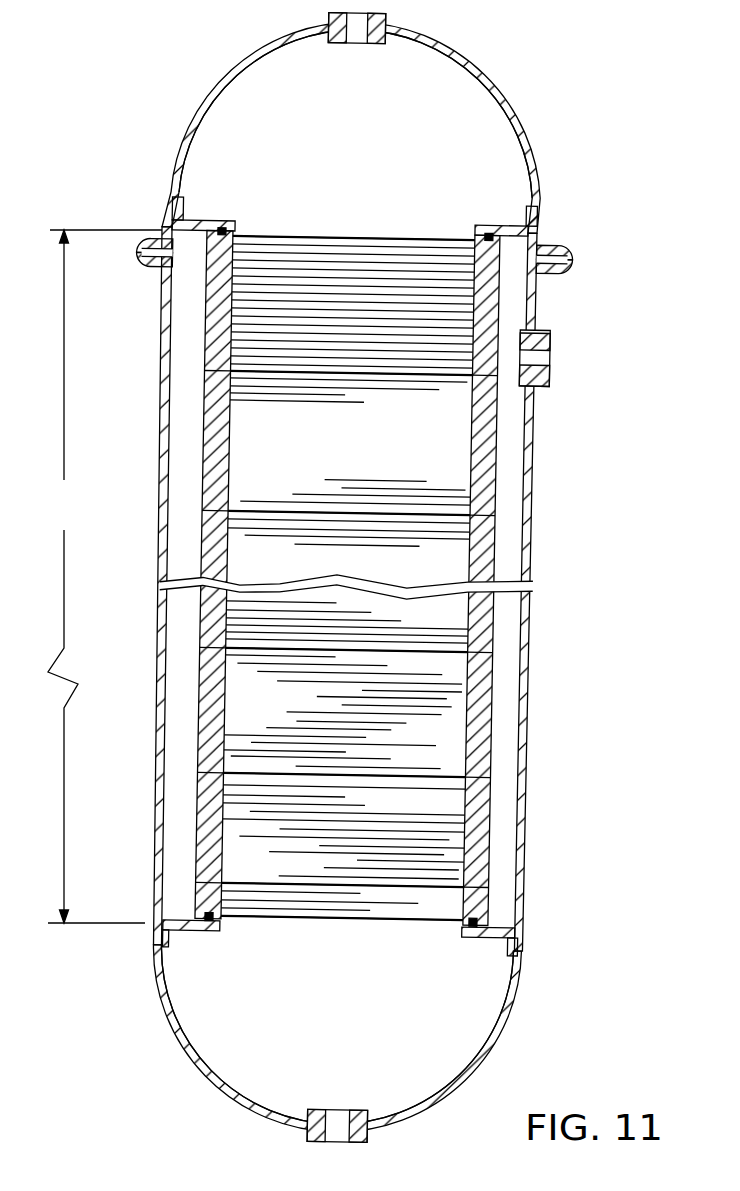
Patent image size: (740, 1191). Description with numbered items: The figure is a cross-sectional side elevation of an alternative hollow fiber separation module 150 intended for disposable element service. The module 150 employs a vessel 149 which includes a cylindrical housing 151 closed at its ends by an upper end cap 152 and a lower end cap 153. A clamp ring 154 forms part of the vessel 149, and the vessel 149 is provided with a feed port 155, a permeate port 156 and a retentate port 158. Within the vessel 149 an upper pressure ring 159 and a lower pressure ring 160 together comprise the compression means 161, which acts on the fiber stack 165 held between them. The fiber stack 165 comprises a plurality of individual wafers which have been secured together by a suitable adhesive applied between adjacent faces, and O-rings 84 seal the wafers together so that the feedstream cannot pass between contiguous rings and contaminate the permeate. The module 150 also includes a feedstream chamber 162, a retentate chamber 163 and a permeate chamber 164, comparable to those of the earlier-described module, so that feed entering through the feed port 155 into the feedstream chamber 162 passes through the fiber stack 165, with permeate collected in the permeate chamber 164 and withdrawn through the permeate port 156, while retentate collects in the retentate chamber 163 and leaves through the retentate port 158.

The O-ring 84 is at (487, 230).
The vessel 149 is at (159, 691).
The module 150 is at (546, 712).
The cylindrical housing 151 is at (540, 447).
The upper end cap 152 is at (508, 101).
The lower end cap 153 is at (508, 1024).
The clamp ring 154 is at (575, 259).
The feed port 155 is at (392, 18).
The permeate port 156 is at (544, 378).
The retentate port 158 is at (368, 1134).
The upper pressure ring 159 is at (502, 228).
The lower pressure ring 160 is at (494, 936).
The compression means 161 is at (212, 206).
The feedstream chamber 162 is at (443, 78).
The retentate chamber 163 is at (443, 1043).
The permeate chamber 164 is at (506, 523).
The fiber stack 165 is at (105, 576).